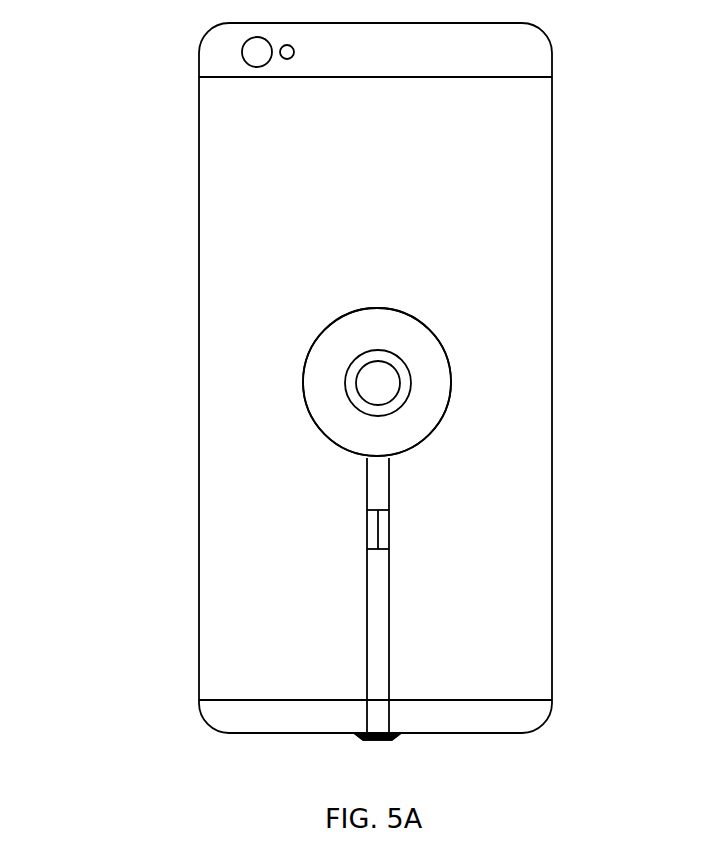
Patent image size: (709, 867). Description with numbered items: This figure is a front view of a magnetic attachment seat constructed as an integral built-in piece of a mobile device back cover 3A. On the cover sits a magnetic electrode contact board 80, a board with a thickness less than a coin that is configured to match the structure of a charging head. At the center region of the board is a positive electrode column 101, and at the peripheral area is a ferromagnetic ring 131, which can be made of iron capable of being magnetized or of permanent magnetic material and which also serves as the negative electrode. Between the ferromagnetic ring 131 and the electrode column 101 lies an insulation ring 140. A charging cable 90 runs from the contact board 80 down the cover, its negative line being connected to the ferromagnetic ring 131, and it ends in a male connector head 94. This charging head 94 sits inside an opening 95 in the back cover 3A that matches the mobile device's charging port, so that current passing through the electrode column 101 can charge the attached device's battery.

The mobile device back cover 3A is at (505, 118).
The magnetic electrode contact board 80 is at (437, 337).
The ferromagnetic ring 131 is at (332, 412).
The insulation ring 140 is at (348, 388).
The electrode column 101 is at (378, 383).
The charging cable 90 is at (379, 592).
The male connector head 94 is at (392, 737).
The opening 95 is at (363, 737).